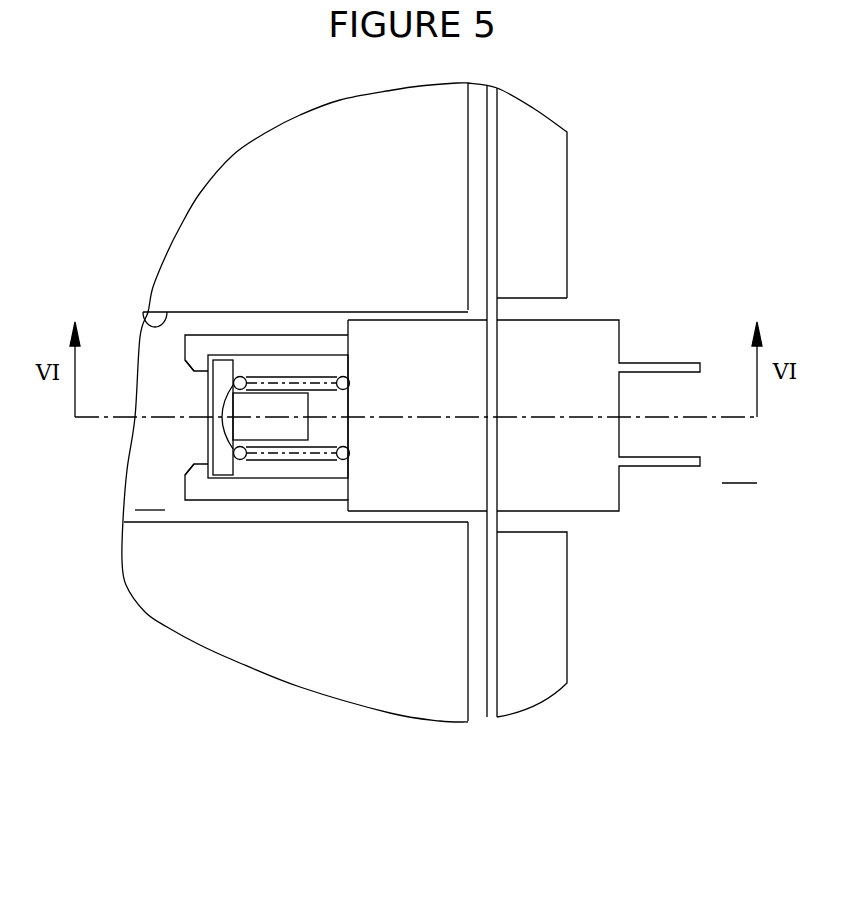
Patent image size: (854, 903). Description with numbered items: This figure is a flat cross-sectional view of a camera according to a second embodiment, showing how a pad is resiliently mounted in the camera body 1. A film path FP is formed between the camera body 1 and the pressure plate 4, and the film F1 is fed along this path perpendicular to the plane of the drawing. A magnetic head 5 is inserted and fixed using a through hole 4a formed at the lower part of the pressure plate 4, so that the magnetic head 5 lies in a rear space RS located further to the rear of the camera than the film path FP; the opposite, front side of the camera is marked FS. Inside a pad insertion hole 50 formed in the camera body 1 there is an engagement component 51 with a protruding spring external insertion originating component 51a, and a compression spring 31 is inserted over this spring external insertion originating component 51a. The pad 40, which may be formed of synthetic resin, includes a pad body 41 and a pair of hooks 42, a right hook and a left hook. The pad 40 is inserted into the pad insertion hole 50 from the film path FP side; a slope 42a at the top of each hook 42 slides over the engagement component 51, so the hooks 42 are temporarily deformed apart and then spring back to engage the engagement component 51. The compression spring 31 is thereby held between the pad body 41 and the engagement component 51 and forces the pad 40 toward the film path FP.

The camera body 1 is at (333, 693).
The pressure plate 4 is at (567, 157).
The through hole 4a is at (545, 310).
The magnetic head 5 is at (620, 495).
The compression spring 31 is at (283, 378).
The pad 40 is at (377, 513).
The pad body 41 is at (435, 483).
The hooks 42 is at (247, 343).
The slope 42a is at (195, 367).
The pad insertion hole 50 is at (138, 328).
The engagement component 51 is at (214, 437).
The spring external insertion originating component 51a is at (283, 460).
The film F1 is at (497, 560).
The film path FP is at (478, 650).
The front side FS is at (150, 498).
The rear space RS is at (739, 472).